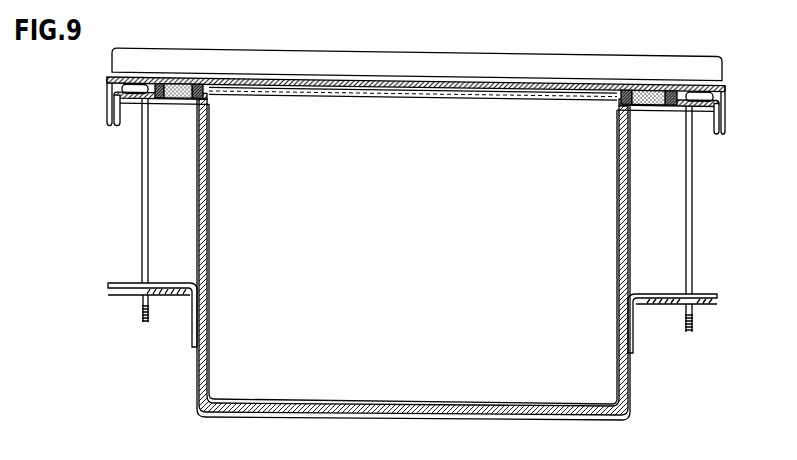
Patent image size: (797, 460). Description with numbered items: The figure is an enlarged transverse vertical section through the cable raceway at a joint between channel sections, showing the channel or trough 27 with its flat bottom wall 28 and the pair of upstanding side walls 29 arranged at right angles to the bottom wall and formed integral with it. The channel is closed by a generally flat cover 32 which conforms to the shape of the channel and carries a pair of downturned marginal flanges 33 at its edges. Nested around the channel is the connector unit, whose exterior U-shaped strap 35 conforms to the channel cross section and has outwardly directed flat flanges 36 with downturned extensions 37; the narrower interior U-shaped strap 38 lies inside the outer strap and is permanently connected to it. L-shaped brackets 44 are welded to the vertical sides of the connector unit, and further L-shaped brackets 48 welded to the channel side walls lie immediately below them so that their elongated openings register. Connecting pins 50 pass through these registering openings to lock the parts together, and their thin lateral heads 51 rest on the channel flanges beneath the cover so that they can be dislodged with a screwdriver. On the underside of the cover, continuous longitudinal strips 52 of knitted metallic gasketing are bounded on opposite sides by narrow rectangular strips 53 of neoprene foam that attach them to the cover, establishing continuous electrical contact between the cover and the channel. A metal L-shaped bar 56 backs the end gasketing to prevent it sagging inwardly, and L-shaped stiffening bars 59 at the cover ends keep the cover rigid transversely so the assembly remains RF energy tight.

The channel 27 is at (214, 249).
The bottom wall 28 is at (550, 416).
The side walls 29 is at (210, 309).
The cover 32 is at (371, 73).
The downturned marginal flanges 33 is at (106, 98).
The exterior U-shaped strap 35 is at (198, 210).
The flanges 36 is at (176, 101).
The downturned extensions 37 is at (118, 122).
The interior U-shaped strap 38 is at (213, 182).
The L-shaped brackets 44 is at (123, 282).
The L-shaped brackets 48 is at (163, 298).
The connecting pins 50 is at (140, 193).
The thin lateral heads 51 is at (132, 84).
The strips of gasketing 52 is at (178, 84).
The rectangular strips 53 is at (202, 82).
The L-shaped bar 56 is at (440, 92).
The L-shaped stiffening bars 59 is at (488, 53).